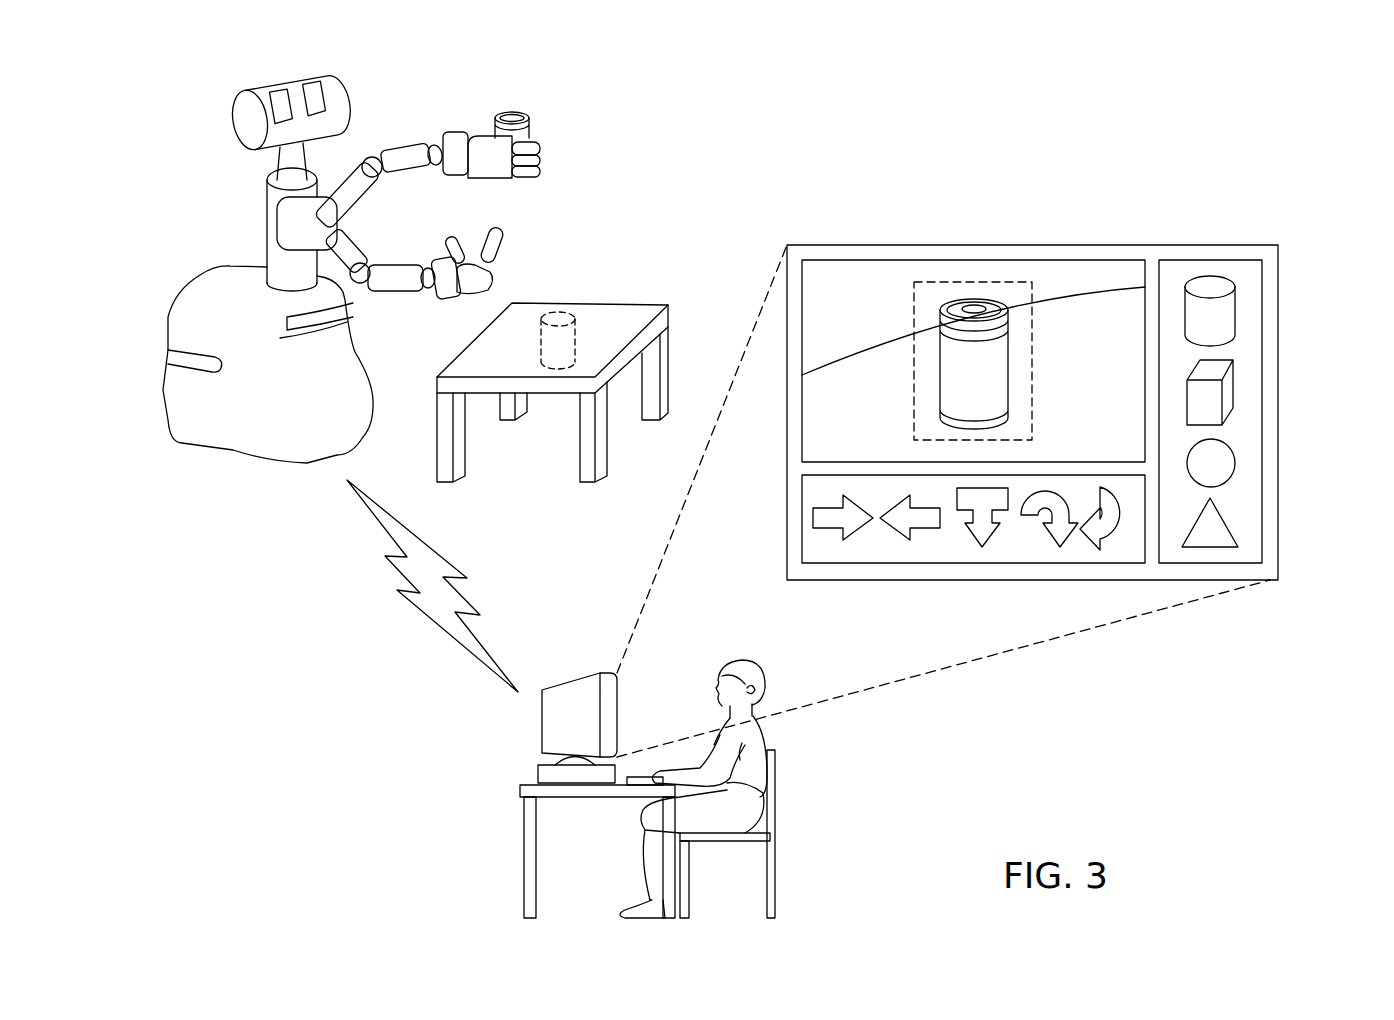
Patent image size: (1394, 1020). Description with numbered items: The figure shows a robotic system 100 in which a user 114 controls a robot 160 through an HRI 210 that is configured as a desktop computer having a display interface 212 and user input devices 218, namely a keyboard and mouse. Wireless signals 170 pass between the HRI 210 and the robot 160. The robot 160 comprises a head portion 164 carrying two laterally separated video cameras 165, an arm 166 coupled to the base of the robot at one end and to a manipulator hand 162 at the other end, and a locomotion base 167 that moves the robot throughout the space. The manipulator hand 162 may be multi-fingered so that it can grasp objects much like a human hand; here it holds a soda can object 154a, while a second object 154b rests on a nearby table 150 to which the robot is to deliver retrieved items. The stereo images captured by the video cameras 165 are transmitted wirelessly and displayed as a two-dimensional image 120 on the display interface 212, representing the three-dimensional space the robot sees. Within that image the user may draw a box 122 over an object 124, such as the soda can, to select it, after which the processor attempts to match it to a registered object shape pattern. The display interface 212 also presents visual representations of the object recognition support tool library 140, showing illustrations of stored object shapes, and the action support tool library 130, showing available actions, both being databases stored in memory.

The robotic system 100 is at (1300, 103).
The user 114 is at (757, 663).
The two-dimensional image 120 is at (987, 323).
The box 122 is at (913, 313).
The object 124 is at (1010, 363).
The action support tool library 130 is at (990, 568).
The object recognition support tool library 140 is at (1242, 374).
The table 150 is at (628, 311).
The object held by robot 154a is at (517, 113).
The object on table 154b is at (560, 310).
The robot 160 is at (341, 254).
The manipulator hand 162 is at (490, 167).
The head portion 164 is at (229, 111).
The video cameras 165 is at (275, 94).
The arm 166 is at (412, 173).
The locomotion base 167 is at (170, 316).
The wireless signals 170 is at (392, 567).
The HRI 210 is at (594, 817).
The display interface 212 is at (618, 689).
The user input devices 218 is at (637, 768).